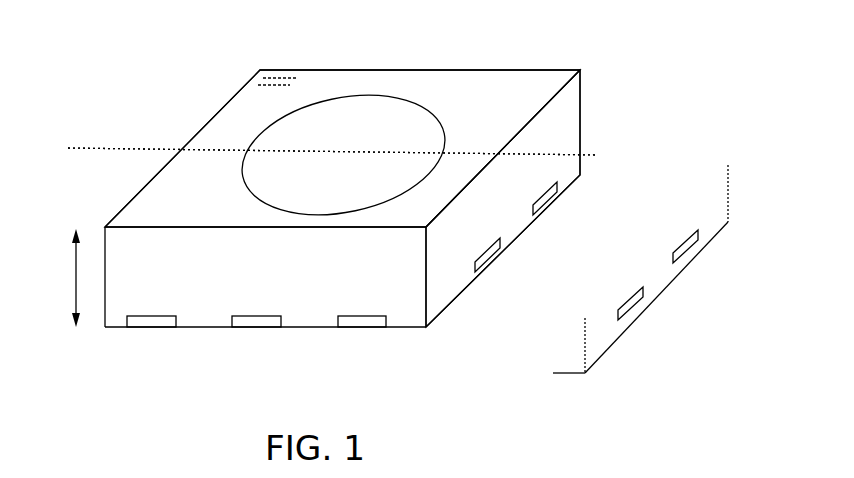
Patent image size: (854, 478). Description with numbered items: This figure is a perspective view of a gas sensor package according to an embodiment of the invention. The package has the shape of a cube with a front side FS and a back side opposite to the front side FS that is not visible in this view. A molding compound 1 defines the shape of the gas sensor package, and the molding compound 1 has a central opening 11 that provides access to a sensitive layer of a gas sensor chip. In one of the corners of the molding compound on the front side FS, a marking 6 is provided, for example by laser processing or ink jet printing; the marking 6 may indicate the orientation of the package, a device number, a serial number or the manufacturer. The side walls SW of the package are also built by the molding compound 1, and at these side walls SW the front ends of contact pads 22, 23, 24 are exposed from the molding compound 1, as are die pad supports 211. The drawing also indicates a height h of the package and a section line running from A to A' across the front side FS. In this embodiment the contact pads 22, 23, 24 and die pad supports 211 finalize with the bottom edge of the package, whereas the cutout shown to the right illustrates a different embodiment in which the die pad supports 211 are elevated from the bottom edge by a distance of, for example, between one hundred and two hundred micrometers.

The molding compound 1 is at (238, 122).
The marking 6 is at (286, 70).
The central opening 11 is at (375, 122).
The front side FS is at (493, 82).
The side walls SW is at (442, 282).
The height of package h is at (63, 278).
The section line A is at (318, 162).
The section line A' is at (354, 162).
The contact pad 22 is at (146, 323).
The contact pad 23 is at (267, 330).
The contact pad 24 is at (363, 328).
The die pad supports 211 is at (545, 203).